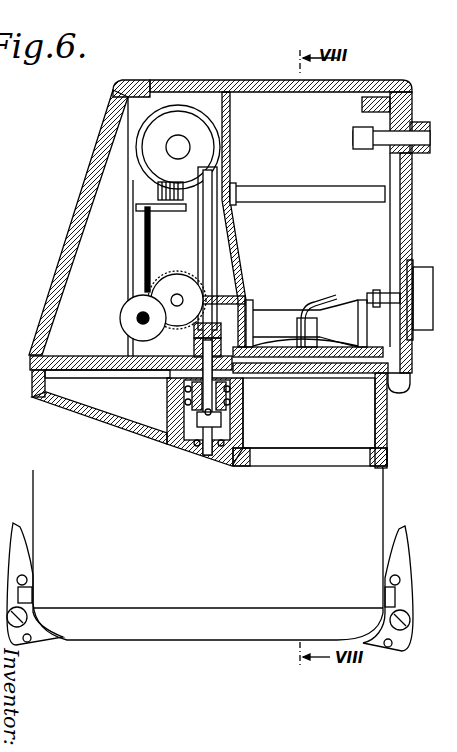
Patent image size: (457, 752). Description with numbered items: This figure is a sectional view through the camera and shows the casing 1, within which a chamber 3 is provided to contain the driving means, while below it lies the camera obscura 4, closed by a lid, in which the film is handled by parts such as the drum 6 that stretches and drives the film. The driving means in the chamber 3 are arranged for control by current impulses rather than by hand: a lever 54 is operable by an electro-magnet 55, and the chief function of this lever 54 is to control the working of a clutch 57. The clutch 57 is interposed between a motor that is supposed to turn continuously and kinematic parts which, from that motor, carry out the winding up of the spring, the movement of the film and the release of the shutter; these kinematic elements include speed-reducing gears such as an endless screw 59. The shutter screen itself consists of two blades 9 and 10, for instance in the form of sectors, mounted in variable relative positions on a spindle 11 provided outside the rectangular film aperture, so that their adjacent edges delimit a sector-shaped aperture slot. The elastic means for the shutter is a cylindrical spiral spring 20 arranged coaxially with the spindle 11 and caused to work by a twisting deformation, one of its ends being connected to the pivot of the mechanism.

The casing 1 is at (155, 80).
The chamber 3 is at (183, 80).
The camera obscura 4 is at (342, 82).
The electro-magnet 55 is at (192, 118).
The lever 54 is at (146, 236).
The endless screw 59 is at (172, 297).
The clutch 57 is at (130, 313).
The spindle 11 is at (193, 358).
The cylindrical spiral spring 20 is at (250, 313).
The drum 6 is at (350, 335).
The blade 9 is at (278, 374).
The blade 10 is at (306, 374).